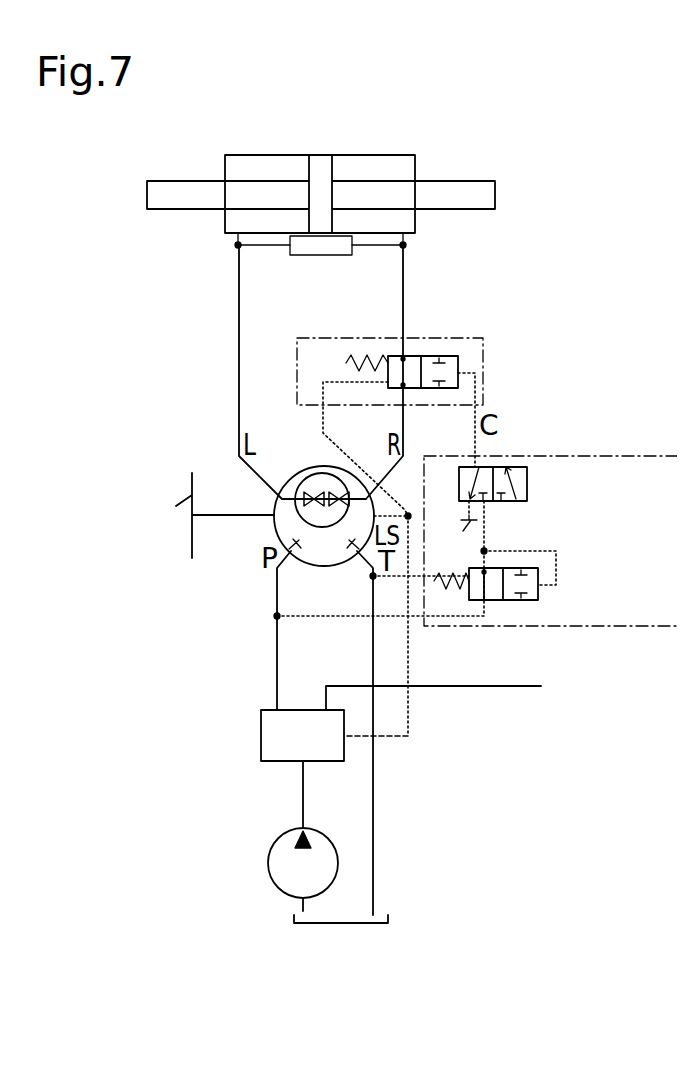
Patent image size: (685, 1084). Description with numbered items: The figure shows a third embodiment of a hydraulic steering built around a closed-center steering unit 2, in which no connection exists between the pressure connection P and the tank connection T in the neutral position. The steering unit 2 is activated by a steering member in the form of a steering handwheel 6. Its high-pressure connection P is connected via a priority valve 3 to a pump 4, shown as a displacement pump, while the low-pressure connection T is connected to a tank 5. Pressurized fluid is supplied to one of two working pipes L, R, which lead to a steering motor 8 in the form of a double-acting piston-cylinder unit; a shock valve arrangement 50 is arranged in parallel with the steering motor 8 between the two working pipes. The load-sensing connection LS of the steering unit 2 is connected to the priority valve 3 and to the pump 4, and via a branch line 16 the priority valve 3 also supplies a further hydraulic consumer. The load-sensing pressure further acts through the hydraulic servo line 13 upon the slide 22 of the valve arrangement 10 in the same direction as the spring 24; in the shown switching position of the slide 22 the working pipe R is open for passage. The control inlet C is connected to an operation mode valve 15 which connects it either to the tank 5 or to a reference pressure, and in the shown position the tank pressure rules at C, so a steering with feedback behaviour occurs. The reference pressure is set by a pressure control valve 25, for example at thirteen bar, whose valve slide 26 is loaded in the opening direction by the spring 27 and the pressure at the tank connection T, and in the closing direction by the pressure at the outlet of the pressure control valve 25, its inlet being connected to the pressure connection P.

The steering unit 2 is at (289, 517).
The priority valve 3 is at (272, 728).
The pump 4 is at (283, 867).
The tank 5 is at (343, 922).
The steering handwheel 6 is at (213, 515).
The steering motor 8 is at (265, 162).
The valve arrangement 10 is at (410, 345).
The hydraulic servo line 13 is at (332, 438).
The operation mode valve 15 is at (497, 546).
The branch line 16 is at (507, 688).
The slide 22 is at (428, 362).
The spring 24 is at (345, 358).
The pressure control valve 25 is at (458, 623).
The valve slide 26 is at (515, 608).
The spring 27 is at (440, 587).
The shock valve arrangement 50 is at (302, 243).